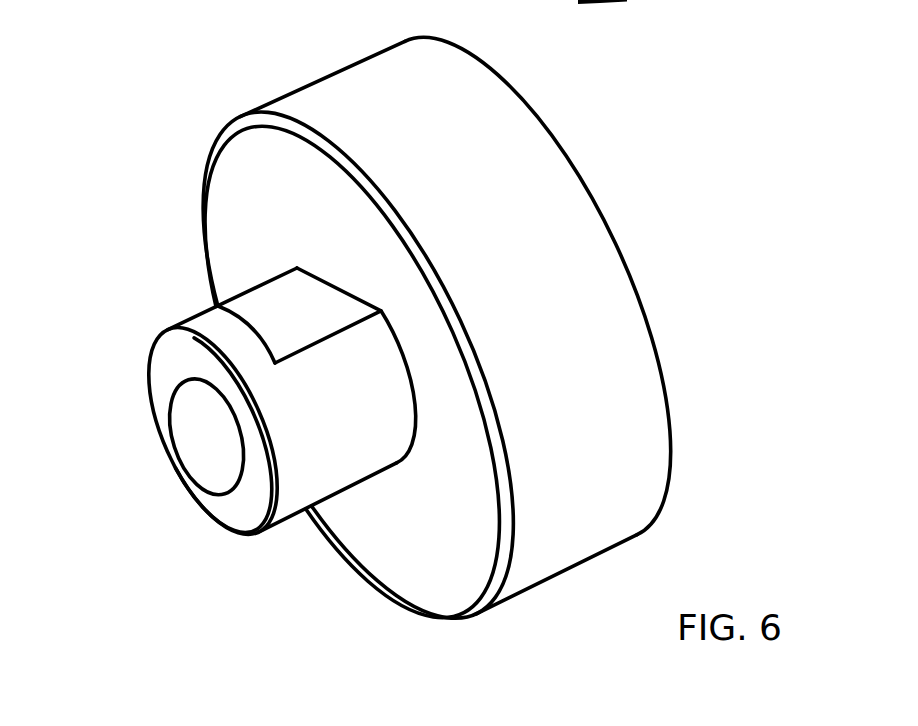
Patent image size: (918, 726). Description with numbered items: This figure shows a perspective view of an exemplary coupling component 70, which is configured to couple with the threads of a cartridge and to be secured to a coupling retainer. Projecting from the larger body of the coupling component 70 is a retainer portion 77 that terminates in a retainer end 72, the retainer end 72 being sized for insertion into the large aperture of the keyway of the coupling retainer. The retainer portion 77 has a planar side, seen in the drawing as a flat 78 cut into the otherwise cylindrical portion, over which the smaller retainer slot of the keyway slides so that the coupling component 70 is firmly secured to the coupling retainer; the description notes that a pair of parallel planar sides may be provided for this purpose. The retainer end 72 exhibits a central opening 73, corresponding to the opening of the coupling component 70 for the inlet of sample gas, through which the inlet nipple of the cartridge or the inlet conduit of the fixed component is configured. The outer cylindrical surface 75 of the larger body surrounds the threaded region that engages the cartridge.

The coupling component 70 is at (312, 84).
The retainer end 72 is at (159, 336).
The bore 73 is at (210, 427).
The outer cylindrical surface 75 is at (608, 225).
The retainer portion 77 is at (298, 470).
The flat on hub 78 is at (270, 320).